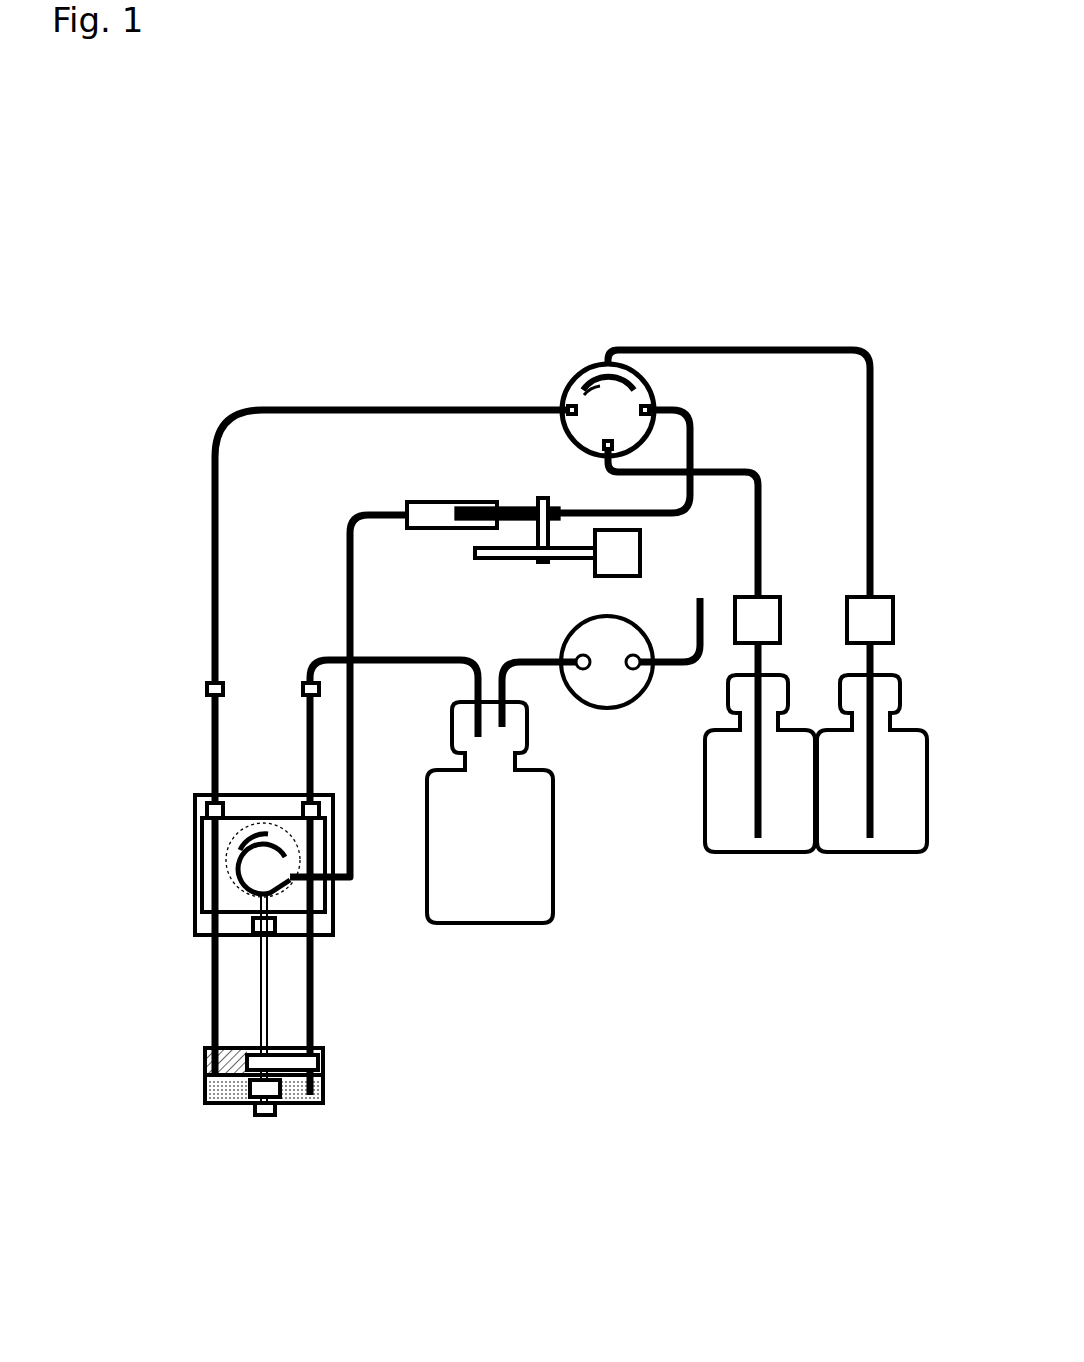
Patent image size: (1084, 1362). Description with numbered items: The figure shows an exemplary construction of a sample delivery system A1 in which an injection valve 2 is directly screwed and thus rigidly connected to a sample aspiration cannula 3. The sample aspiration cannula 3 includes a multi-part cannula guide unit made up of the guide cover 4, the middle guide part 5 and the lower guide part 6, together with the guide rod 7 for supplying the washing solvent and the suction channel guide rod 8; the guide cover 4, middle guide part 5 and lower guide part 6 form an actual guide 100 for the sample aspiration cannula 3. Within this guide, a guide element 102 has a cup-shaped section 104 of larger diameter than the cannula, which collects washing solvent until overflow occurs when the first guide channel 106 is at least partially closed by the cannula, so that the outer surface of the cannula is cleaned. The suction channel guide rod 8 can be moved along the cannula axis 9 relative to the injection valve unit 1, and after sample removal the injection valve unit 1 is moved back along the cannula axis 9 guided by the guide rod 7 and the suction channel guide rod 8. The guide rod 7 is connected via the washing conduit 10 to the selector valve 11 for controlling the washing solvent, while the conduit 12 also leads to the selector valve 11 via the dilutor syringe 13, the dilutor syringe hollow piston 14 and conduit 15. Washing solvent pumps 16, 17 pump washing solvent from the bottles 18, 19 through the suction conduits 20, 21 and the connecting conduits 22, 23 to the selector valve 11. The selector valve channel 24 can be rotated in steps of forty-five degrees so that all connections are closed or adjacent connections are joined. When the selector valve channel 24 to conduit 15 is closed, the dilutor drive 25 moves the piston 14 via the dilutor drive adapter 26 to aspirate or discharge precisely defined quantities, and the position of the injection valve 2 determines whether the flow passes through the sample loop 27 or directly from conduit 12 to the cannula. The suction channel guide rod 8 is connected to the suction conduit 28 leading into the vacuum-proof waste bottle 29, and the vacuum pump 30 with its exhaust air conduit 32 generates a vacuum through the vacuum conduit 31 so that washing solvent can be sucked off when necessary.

The sample delivery system A1 is at (228, 355).
The injection valve unit 1 is at (200, 835).
The injection valve 2 is at (245, 800).
The sample aspiration cannula 3 is at (262, 968).
The guide cover 4 is at (205, 1050).
The middle guide part 5 is at (205, 1078).
The lower guide part 6 is at (205, 1100).
The guide rod for supplying the washing solvent 7 is at (190, 735).
The suction channel guide rod 8 is at (270, 800).
The cannula axis 9 is at (262, 1130).
The washing conduit 10 is at (312, 402).
The selector valve 11 is at (617, 412).
The conduit 12 is at (347, 567).
The dilutor syringe 13 is at (437, 497).
The dilutor syringe hollow piston 14 is at (503, 500).
The conduit 15 is at (542, 498).
The washing solvent pump 16 is at (852, 596).
The washing solvent pump 17 is at (918, 700).
The bottle 18 is at (892, 820).
The bottle 19 is at (785, 815).
The suction conduit 20 is at (870, 797).
The suction conduit 21 is at (753, 800).
The connecting conduit 22 is at (770, 596).
The connecting conduit 23 is at (753, 346).
The selector valve channel 24 is at (588, 388).
The dilutor drive 25 is at (696, 516).
The dilutor drive adapter 26 is at (520, 505).
The sample loop 27 is at (328, 1105).
The suction conduit 28 is at (357, 890).
The vacuum-proof waste bottle 29 is at (455, 885).
The vacuum pump 30 is at (605, 692).
The vacuum conduit 31 is at (540, 668).
The exhaust air conduit 32 is at (670, 668).
The guide 100 is at (200, 1055).
The guide element 102 is at (268, 1070).
The cup-shaped section 104 is at (262, 1068).
The first guide channel 106 is at (285, 1078).